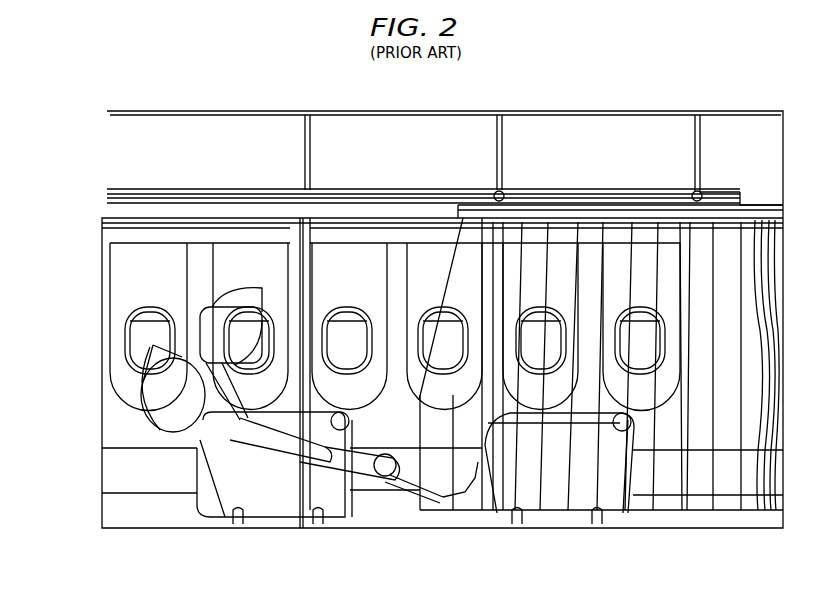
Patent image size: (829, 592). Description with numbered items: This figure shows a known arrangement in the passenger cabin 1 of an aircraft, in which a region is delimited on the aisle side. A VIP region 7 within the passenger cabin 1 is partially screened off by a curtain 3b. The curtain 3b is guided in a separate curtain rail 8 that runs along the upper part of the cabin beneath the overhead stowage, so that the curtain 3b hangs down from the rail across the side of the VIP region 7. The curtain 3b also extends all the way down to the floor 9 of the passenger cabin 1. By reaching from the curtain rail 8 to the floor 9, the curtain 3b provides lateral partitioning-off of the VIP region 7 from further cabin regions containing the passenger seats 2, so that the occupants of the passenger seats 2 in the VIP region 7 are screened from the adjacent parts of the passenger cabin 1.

The passenger cabin 1 is at (86, 301).
The passenger seats 2 is at (283, 493).
The curtain 3b is at (700, 483).
The VIP region 7 is at (357, 268).
The curtain rail 8 is at (578, 212).
The floor 9 is at (390, 528).